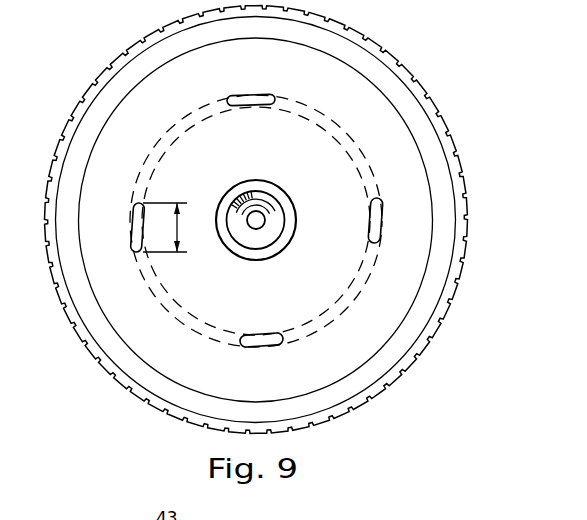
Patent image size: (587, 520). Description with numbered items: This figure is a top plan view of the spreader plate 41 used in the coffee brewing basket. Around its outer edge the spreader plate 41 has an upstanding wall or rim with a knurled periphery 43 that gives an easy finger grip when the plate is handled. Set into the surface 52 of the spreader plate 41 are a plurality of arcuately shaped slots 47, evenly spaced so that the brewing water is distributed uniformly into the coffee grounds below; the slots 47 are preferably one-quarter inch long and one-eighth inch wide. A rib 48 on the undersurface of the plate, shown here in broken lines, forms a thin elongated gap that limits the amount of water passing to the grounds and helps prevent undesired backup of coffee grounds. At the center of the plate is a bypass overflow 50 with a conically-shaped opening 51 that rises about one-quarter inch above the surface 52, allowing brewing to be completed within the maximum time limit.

The spreader plate 41 is at (438, 70).
The knurled periphery 43 is at (407, 375).
The slots 47 is at (250, 97).
The rib 48 is at (190, 315).
The overflow 50 is at (258, 218).
The conically-shaped opening 51 is at (287, 236).
The surface of the spreader plate 52 is at (272, 302).